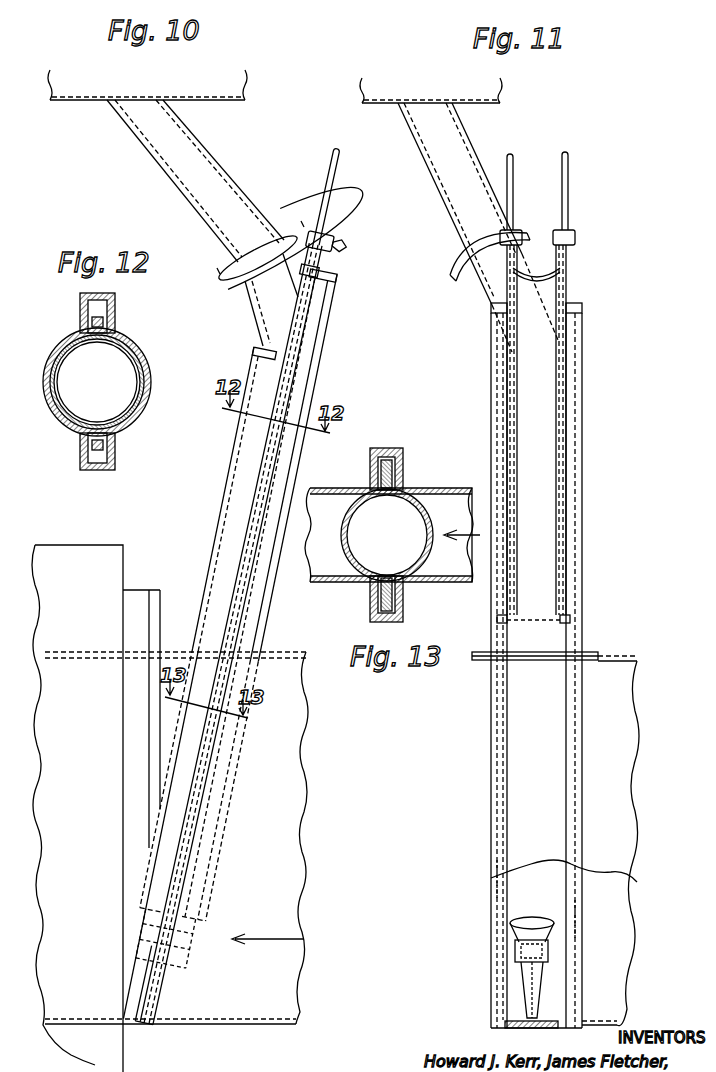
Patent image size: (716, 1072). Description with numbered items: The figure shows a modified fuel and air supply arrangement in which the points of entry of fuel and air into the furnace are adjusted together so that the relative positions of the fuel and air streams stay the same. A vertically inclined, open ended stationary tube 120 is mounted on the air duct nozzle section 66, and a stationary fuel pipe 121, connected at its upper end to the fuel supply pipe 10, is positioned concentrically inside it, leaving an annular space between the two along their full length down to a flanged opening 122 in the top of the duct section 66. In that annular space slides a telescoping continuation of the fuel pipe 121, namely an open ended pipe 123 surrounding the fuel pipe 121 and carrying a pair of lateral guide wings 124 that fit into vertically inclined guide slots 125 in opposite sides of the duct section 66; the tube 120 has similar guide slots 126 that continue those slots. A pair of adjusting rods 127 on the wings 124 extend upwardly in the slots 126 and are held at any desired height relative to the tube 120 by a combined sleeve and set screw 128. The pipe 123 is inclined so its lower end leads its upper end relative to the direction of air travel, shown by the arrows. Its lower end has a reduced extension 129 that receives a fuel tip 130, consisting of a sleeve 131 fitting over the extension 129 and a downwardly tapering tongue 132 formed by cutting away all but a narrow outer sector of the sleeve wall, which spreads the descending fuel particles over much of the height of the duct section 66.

In FIG. 10, the fuel supply pipe 10 is at (222, 172).
In FIG. 11, the fuel supply pipe 10 is at (430, 170).
In FIG. 10, the air duct nozzle section 66 is at (285, 780).
In FIG. 13, the air duct nozzle section 66 is at (450, 488).
In FIG. 11, the air duct nozzle section 66 is at (505, 1015).
In FIG. 10, the stationary tube 120 is at (325, 357).
In FIG. 12, the stationary tube 120 is at (148, 408).
In FIG. 11, the stationary tube 120 is at (538, 452).
In FIG. 10, the stationary fuel pipe 121 is at (303, 390).
In FIG. 12, the stationary fuel pipe 121 is at (57, 384).
In FIG. 11, the stationary fuel pipe 121 is at (553, 510).
In FIG. 11, the flanged opening 122 is at (583, 650).
In FIG. 12, the open ended pipe 123 is at (148, 367).
In FIG. 13, the open ended pipe 123 is at (347, 533).
In FIG. 11, the open ended pipe 123 is at (510, 848).
In FIG. 12, the lateral guide wings 124 is at (80, 460).
In FIG. 13, the lateral guide wings 124 is at (385, 457).
In FIG. 11, the lateral guide wings 124 is at (500, 882).
In FIG. 13, the guide slots 125 is at (400, 460).
In FIG. 12, the guide slots 126 is at (112, 452).
In FIG. 10, the adjusting rods 127 is at (342, 212).
In FIG. 12, the adjusting rods 127 is at (113, 316).
In FIG. 11, the adjusting rods 127 is at (563, 187).
In FIG. 10, the combined sleeve and set screw 128 is at (333, 262).
In FIG. 11, the combined sleeve and set screw 128 is at (562, 230).
In FIG. 11, the reduced extension 129 is at (532, 920).
In FIG. 10, the fuel tip 130 is at (157, 993).
In FIG. 11, the fuel tip 130 is at (542, 980).
In FIG. 10, the sleeve 131 is at (172, 949).
In FIG. 11, the sleeve 131 is at (515, 955).
In FIG. 11, the downwardly tapering tongue 132 is at (530, 999).